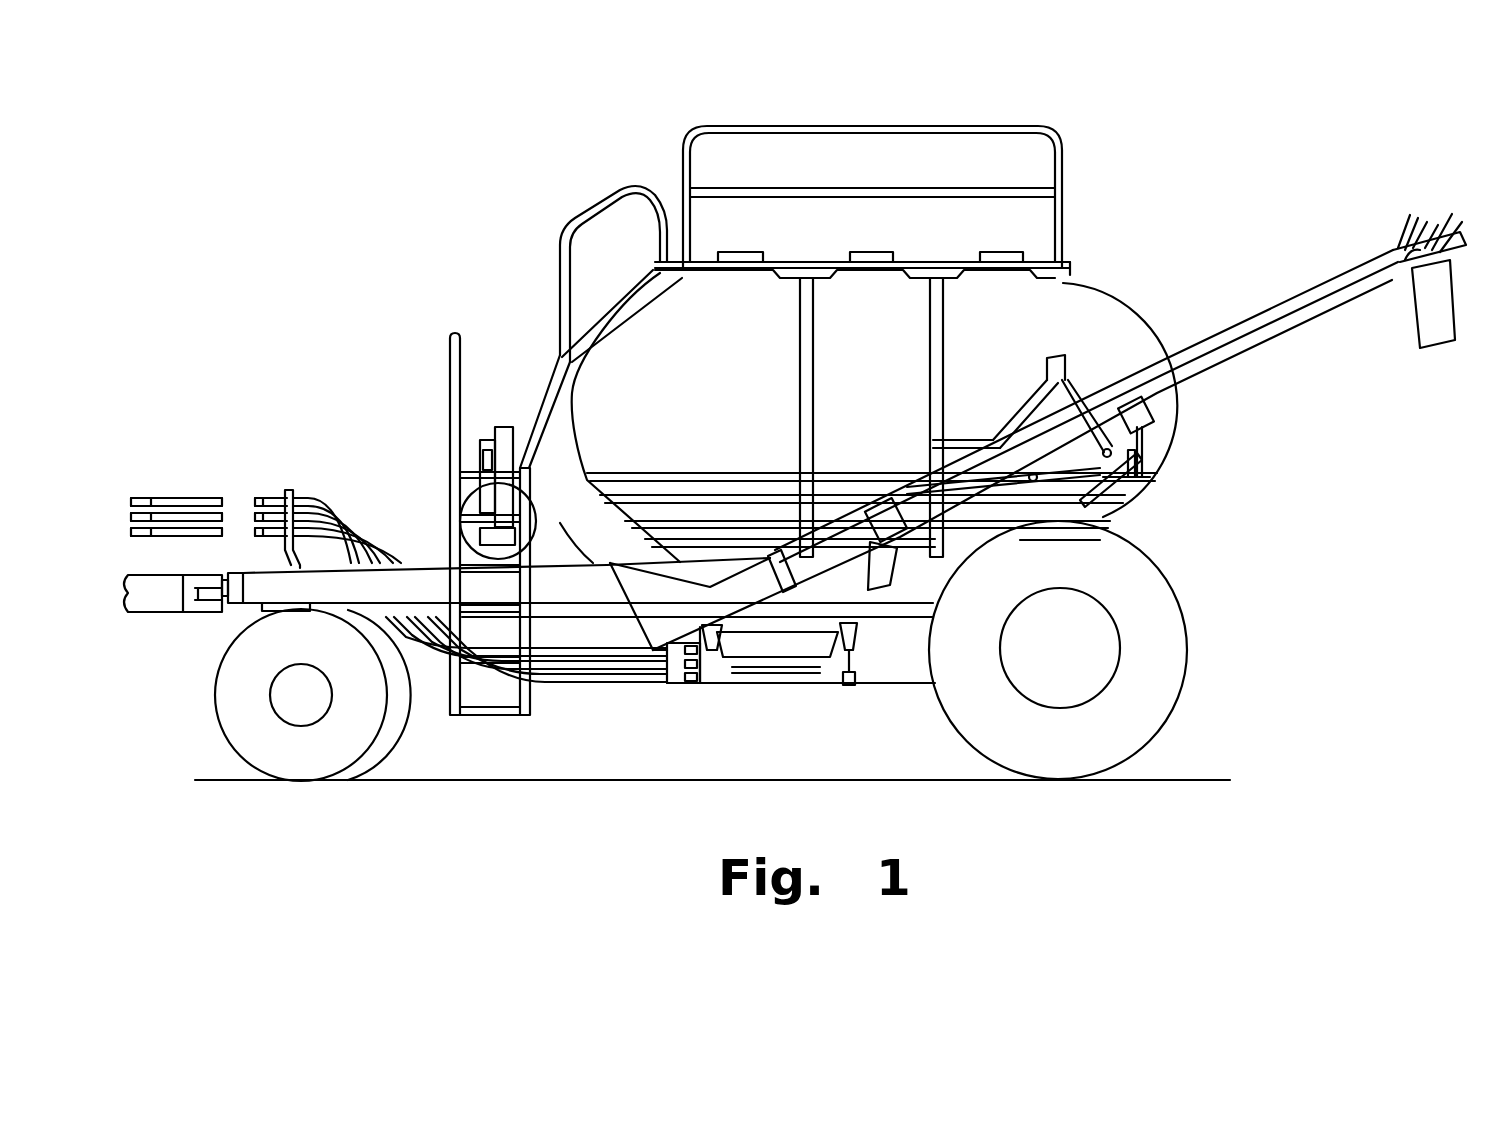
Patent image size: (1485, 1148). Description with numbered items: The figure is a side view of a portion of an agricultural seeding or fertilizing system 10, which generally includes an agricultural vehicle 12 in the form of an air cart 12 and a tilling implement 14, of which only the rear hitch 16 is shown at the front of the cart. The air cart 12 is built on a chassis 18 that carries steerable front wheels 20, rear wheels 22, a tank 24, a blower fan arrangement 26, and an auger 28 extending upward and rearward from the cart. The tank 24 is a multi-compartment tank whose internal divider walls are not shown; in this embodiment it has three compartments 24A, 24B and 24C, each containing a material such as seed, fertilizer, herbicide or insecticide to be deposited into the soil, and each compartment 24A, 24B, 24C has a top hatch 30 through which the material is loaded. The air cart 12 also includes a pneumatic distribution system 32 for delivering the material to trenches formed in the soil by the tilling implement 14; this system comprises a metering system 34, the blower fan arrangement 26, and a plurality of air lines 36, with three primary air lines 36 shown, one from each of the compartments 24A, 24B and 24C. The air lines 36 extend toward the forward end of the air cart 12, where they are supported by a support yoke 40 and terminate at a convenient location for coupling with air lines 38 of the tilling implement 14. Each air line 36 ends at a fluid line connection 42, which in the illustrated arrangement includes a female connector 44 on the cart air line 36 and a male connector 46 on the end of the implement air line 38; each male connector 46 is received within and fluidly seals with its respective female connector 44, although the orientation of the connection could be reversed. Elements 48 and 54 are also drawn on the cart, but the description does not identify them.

The agricultural seeding or fertilizing system 10 is at (250, 401).
The agricultural vehicle 12 is at (1152, 172).
The tilling implement 14 is at (135, 617).
The rear hitch 16 is at (161, 613).
The chassis 18 is at (445, 567).
The steerable front wheels 20 is at (372, 742).
The rear wheels 22 is at (1183, 698).
The tank 24 is at (1121, 318).
The compartment 24A is at (737, 350).
The compartment 24B is at (895, 350).
The compartment 24C is at (1032, 352).
The blower fan arrangement 26 is at (465, 500).
The auger 28 is at (1363, 258).
The top hatch 30 is at (735, 250).
The pneumatic distribution system 32 is at (712, 702).
The metering system 34 is at (841, 704).
The air lines 36 is at (568, 652).
The air lines 38 is at (162, 530).
The support yoke 40 is at (294, 496).
The fluid line connection 42 is at (284, 485).
The female connector 44 is at (263, 502).
The male connector 46 is at (213, 530).
The controller 48 is at (505, 425).
The control box 54 is at (480, 455).